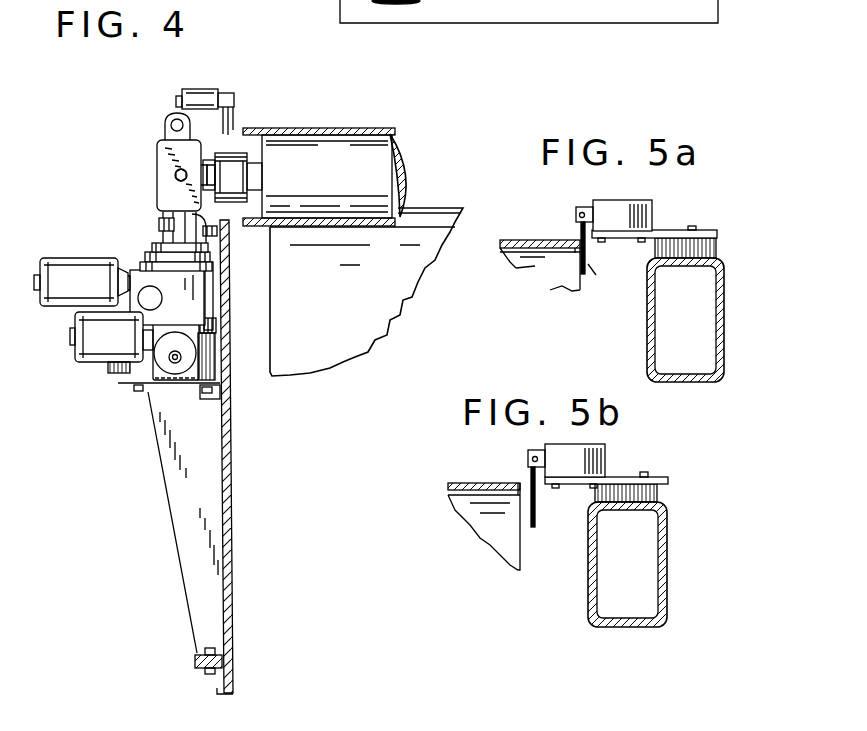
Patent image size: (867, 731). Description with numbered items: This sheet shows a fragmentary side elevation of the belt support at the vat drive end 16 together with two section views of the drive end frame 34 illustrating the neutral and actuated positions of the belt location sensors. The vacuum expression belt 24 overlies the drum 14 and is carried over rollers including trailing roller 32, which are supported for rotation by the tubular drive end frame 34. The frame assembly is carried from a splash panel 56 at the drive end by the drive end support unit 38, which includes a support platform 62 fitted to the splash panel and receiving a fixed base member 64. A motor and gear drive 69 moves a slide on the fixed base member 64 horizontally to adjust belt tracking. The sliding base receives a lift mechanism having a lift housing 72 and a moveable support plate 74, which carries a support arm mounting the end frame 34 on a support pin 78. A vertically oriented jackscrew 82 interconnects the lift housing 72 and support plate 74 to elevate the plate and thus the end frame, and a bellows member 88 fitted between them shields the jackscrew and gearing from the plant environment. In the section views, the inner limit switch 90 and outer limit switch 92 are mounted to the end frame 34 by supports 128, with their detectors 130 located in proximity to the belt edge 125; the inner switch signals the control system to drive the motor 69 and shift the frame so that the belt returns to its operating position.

In FIG. 4, the drum 14 is at (418, 208).
In FIG. 4, the vat drive end 16 is at (136, 199).
In FIG. 4, the vacuum expression belt 24 is at (352, 128).
In FIG. 5a, the vacuum expression belt 24 is at (530, 240).
In FIG. 5b, the vacuum expression belt 24 is at (480, 483).
In FIG. 4, the trailing roller 32 is at (403, 152).
In FIG. 4, the drive end frame 34 is at (157, 155).
In FIG. 5a, the drive end frame 34 is at (648, 340).
In FIG. 5b, the drive end frame 34 is at (668, 585).
In FIG. 4, the drive end support unit 38 is at (90, 234).
In FIG. 4, the splash panel 56 is at (233, 506).
In FIG. 4, the support platform 62 is at (168, 482).
In FIG. 4, the fixed base member 64 is at (141, 375).
In FIG. 4, the motor and gear drive 69 is at (112, 343).
In FIG. 4, the lift housing 72 is at (193, 318).
In FIG. 4, the moveable support plate 74 is at (212, 251).
In FIG. 4, the support pin 78 is at (158, 226).
In FIG. 4, the jackscrew 82 is at (72, 289).
In FIG. 4, the bellows member 88 is at (182, 262).
In FIG. 4, the inner limit switch 90 is at (201, 88).
In FIG. 5a, the inner limit switch 90 is at (630, 212).
In FIG. 4, the outer limit switch 92 is at (178, 98).
In FIG. 5b, the outer limit switch 92 is at (604, 460).
In FIG. 5a, the belt edge 125 is at (576, 253).
In FIG. 5b, the belt edge 125 is at (519, 484).
In FIG. 5a, the support 128 is at (675, 231).
In FIG. 5b, the support 128 is at (660, 477).
In FIG. 4, the detector 130 is at (237, 126).
In FIG. 5a, the detector 130 is at (588, 262).
In FIG. 5b, the detector 130 is at (536, 515).